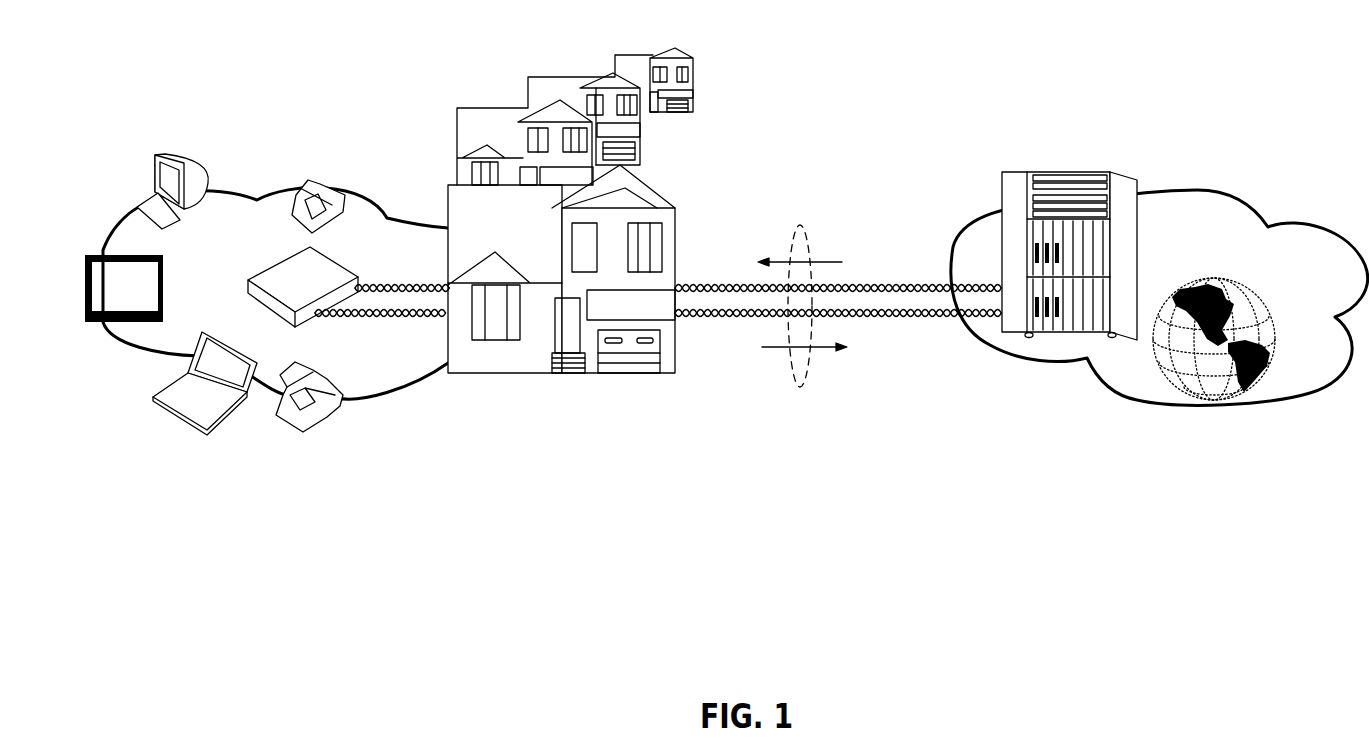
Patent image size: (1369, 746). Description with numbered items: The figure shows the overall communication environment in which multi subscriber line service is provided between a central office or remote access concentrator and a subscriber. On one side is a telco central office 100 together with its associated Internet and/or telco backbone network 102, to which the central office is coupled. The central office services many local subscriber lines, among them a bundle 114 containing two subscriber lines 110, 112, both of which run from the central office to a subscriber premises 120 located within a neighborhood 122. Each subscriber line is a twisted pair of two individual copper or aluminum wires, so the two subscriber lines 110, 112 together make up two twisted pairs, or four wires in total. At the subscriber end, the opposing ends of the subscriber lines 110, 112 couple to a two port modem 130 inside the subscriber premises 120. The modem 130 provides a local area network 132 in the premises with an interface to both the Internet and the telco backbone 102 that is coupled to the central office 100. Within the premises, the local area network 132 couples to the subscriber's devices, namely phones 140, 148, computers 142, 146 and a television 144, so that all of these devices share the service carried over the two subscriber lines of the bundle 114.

The telco central office 100 is at (1095, 170).
The internet and/or telco backbone network 102 is at (1103, 383).
The subscriber line 110 is at (853, 282).
The subscriber line 112 is at (858, 315).
The bundle 114 is at (795, 387).
The subscriber premises 120 is at (507, 373).
The neighborhood 122 is at (672, 117).
The two port modem 130 is at (298, 277).
The local area network 132 is at (400, 377).
The phone 140 is at (308, 188).
The computer 142 is at (187, 155).
The television 144 is at (147, 322).
The computer 146 is at (183, 427).
The phone 148 is at (305, 432).